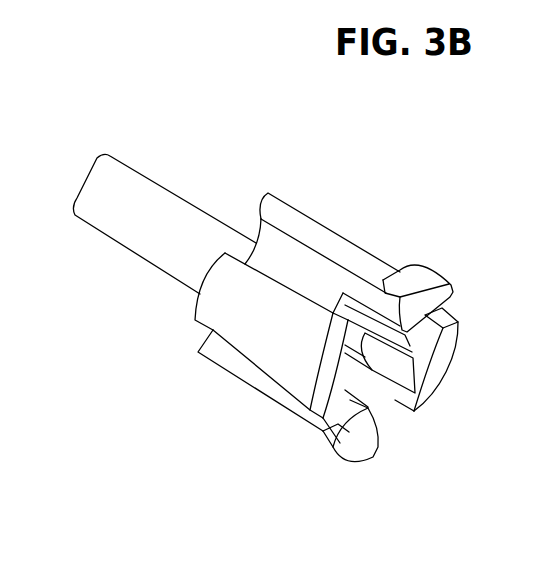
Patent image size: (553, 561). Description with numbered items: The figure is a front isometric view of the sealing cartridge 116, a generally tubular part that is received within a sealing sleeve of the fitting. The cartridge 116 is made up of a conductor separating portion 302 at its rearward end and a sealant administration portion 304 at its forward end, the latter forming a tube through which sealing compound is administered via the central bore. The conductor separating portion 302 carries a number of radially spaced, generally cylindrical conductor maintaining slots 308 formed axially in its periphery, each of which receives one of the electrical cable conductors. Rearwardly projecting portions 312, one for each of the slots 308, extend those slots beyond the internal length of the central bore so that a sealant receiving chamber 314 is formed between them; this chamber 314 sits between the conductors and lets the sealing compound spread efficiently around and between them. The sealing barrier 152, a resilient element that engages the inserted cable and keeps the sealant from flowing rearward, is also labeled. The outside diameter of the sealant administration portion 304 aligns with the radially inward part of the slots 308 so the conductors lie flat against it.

The sealing cartridge 116 is at (158, 143).
The conductor separating portion 302 is at (388, 238).
The sealant administration portion 304 is at (210, 190).
The conductor maintaining slots 308 is at (315, 279).
The rearwardly projecting portions 312 is at (335, 247).
The sealing barrier 152 is at (442, 280).
The sealant receiving chamber 314 is at (382, 392).